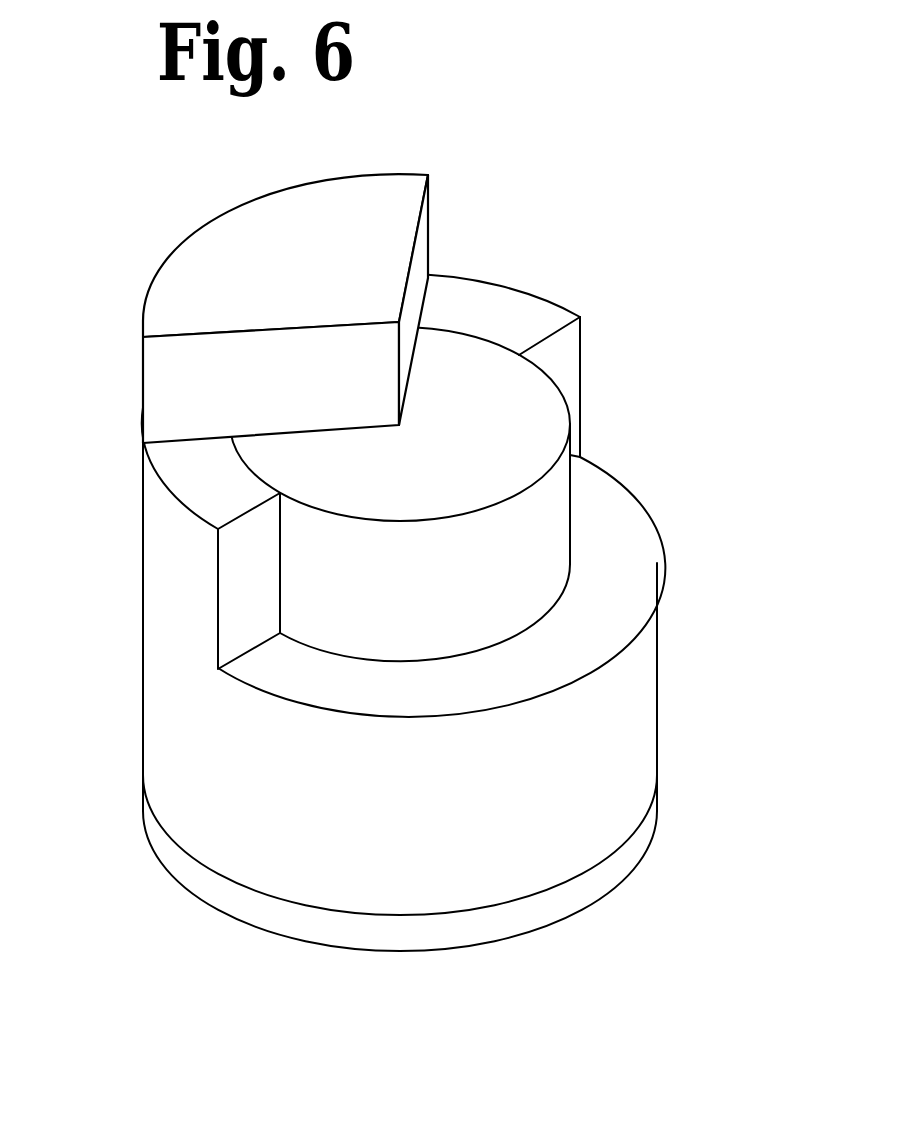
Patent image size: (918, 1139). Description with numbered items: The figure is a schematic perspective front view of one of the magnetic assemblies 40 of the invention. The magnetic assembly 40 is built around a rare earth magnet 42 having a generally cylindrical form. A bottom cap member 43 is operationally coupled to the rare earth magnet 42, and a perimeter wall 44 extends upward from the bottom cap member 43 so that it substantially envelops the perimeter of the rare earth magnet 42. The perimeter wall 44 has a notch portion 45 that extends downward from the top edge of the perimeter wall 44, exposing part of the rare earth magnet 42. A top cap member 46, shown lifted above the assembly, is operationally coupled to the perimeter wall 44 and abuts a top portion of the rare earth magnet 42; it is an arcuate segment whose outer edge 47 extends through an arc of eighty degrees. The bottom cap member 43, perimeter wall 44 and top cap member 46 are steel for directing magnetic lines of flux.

The magnetic assembly 40 is at (633, 377).
The rare earth magnet 42 is at (470, 370).
The bottom cap member 43 is at (657, 806).
The perimeter wall 44 is at (657, 679).
The notch portion 45 is at (642, 485).
The top cap member 46 is at (231, 283).
The outer edge 47 is at (265, 175).